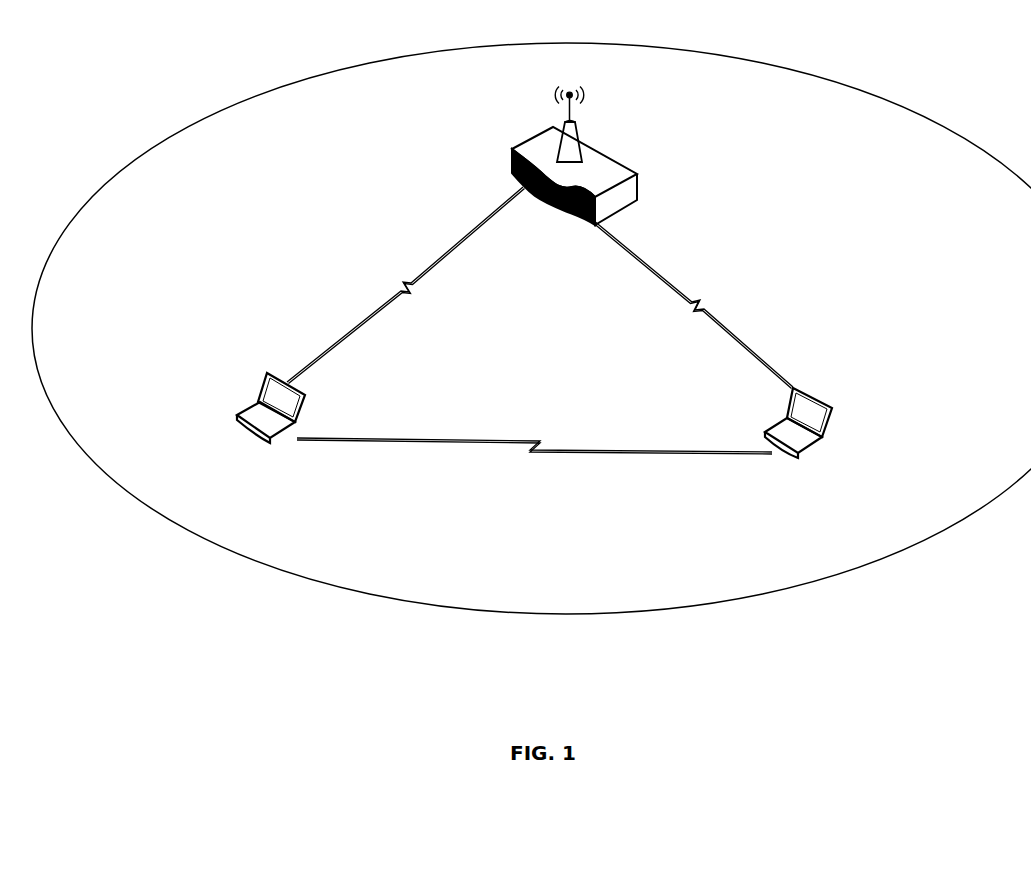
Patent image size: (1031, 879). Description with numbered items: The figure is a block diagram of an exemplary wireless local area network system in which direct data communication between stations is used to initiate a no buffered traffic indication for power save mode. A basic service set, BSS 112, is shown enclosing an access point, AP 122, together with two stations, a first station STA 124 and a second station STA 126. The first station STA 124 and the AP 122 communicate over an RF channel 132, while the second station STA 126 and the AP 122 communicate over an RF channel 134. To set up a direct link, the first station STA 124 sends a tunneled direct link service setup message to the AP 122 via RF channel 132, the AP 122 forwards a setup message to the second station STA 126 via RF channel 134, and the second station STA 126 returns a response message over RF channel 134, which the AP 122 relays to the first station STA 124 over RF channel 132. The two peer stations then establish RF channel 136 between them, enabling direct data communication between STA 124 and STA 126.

The BSS 112 is at (797, 72).
The AP 122 is at (515, 147).
The STA_1 124 is at (257, 377).
The STA_2 126 is at (853, 408).
The RF channel 132 is at (373, 295).
The RF channel 134 is at (688, 288).
The RF channel 136 is at (498, 440).